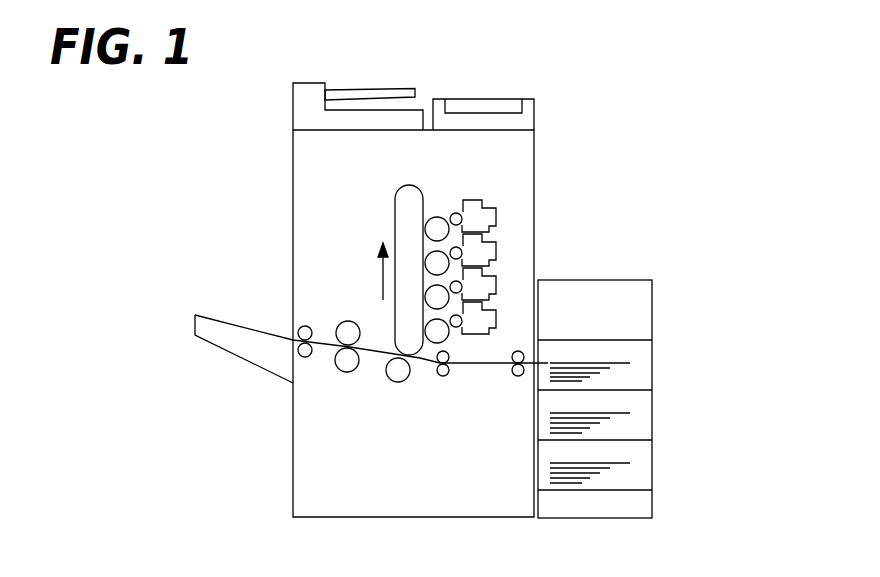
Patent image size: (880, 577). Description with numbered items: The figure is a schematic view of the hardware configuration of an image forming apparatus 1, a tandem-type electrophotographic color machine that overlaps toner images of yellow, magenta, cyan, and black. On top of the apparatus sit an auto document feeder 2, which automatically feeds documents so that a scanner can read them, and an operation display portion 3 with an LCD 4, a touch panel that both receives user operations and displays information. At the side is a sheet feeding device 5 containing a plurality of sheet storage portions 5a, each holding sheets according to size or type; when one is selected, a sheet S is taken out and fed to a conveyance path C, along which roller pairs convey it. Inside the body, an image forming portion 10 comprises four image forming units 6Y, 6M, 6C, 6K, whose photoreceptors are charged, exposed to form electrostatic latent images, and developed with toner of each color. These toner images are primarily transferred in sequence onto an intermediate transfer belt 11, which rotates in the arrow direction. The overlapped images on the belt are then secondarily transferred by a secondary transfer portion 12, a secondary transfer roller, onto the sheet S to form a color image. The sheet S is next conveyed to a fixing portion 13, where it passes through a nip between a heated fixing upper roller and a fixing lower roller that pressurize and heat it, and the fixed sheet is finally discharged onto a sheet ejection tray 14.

The image forming apparatus 1 is at (451, 260).
The auto document feeder 2 is at (295, 120).
The operation display portion 3 is at (478, 97).
The LCD 4 is at (513, 102).
The sheet feeding device 5 is at (625, 365).
The sheet storage portion 5a is at (652, 371).
The image forming unit 6Y is at (496, 218).
The image forming unit 6M is at (496, 252).
The image forming unit 6C is at (496, 285).
The image forming unit 6K is at (496, 318).
The image forming portion 10 is at (509, 237).
The intermediate transfer belt 11 is at (396, 206).
The secondary transfer portion 12 is at (397, 383).
The fixing portion 13 is at (365, 308).
The sheet ejection tray 14 is at (192, 320).
The sheet S is at (575, 363).
The conveyance path C is at (470, 359).